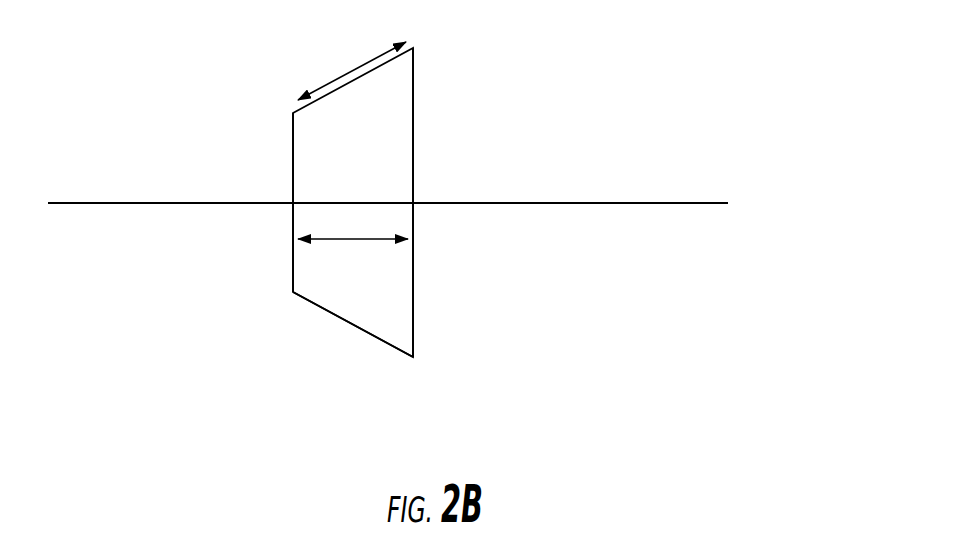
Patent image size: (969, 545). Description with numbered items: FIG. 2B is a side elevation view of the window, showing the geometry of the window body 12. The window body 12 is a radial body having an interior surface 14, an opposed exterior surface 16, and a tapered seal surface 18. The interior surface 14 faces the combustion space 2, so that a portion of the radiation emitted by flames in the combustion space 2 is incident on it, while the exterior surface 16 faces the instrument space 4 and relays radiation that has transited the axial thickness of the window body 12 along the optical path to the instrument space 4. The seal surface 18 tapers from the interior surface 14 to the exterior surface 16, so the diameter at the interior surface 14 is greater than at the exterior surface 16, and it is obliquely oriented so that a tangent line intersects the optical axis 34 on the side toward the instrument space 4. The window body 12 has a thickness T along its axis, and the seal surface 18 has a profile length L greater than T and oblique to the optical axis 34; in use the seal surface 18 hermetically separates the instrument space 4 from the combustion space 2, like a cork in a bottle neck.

The combustion space 2 is at (735, 216).
The instrument space 4 is at (50, 248).
The window body 12 is at (268, 360).
The interior surface 14 is at (413, 265).
The exterior surface 16 is at (292, 212).
The seal surface 18 is at (386, 346).
The optical axis 34 is at (635, 203).